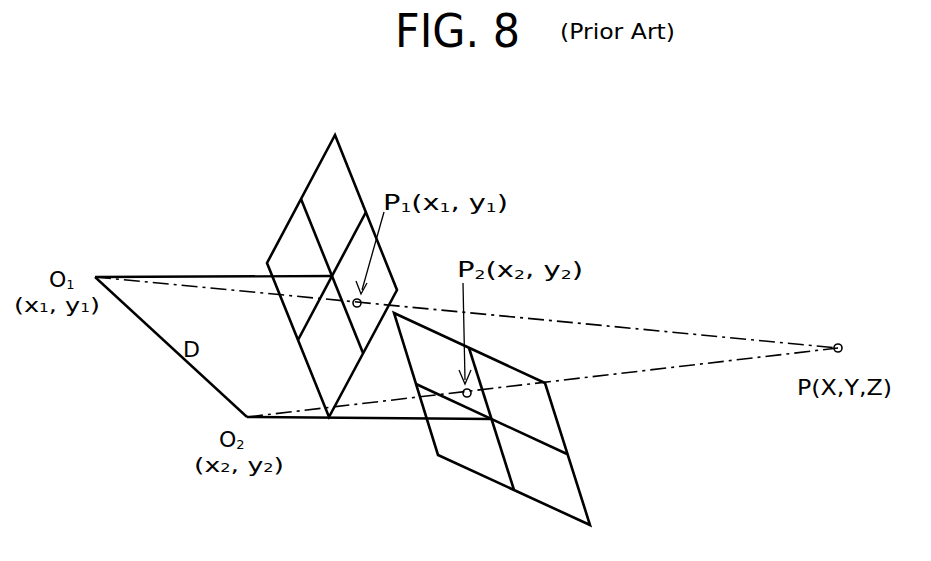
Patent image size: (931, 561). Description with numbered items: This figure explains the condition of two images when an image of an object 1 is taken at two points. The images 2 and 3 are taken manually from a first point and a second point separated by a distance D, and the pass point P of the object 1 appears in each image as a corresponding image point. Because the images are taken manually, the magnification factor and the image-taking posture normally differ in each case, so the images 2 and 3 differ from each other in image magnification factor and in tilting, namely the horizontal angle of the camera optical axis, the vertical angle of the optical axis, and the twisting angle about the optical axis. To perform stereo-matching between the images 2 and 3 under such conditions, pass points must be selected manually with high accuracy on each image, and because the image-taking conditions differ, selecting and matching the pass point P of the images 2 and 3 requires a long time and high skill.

The object 1 is at (838, 344).
The image 2 is at (341, 146).
The image 3 is at (580, 481).